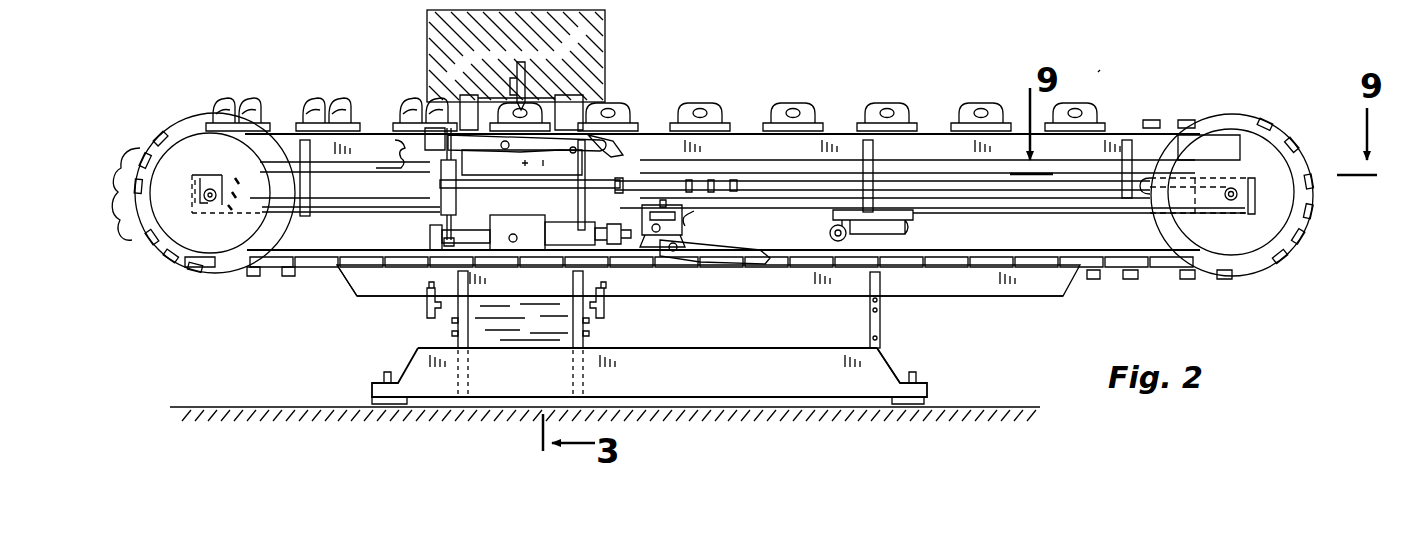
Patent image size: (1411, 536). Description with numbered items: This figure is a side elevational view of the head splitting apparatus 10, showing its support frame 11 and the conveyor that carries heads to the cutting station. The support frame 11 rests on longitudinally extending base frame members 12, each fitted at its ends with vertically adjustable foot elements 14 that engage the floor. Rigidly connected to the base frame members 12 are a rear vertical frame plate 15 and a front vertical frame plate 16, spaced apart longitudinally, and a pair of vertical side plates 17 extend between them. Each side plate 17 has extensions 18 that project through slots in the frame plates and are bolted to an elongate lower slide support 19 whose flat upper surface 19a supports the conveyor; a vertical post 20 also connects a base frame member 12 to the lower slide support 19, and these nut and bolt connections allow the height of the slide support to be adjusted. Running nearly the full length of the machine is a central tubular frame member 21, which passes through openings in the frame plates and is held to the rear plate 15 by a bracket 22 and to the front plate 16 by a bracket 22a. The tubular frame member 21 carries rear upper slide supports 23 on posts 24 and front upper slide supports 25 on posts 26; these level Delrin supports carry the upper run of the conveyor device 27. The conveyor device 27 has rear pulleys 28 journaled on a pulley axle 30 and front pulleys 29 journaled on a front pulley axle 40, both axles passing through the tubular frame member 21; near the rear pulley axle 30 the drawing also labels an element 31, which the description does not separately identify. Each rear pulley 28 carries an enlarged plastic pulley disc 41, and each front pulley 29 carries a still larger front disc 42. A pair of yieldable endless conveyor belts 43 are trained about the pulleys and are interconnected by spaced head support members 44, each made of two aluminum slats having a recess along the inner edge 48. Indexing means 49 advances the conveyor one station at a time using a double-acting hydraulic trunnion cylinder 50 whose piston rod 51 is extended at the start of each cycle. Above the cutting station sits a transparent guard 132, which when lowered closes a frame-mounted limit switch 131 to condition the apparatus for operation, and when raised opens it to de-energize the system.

The head splitting apparatus 10 is at (1101, 70).
The support frame 11 is at (892, 358).
The base frame member 12 is at (793, 363).
The foot element 14 is at (372, 399).
The rear vertical frame plate 15 is at (588, 332).
The front vertical frame plate 16 is at (460, 329).
The vertical side plate 17 is at (540, 333).
The extension 18 is at (428, 303).
The lower slide support 19 is at (982, 290).
The upper surface 19a is at (390, 266).
The vertical post 20 is at (870, 328).
The central tubular frame member 21 is at (988, 200).
The bracket 22 is at (584, 208).
The bracket 22a is at (468, 206).
The rear upper slide support 23 is at (922, 146).
The post 24 is at (873, 186).
The front upper slide support 25 is at (372, 148).
The post 26 is at (306, 187).
The conveyor device 27 is at (1173, 105).
The rear pulley 28 is at (1256, 150).
The front pulley 29 is at (190, 150).
The pulley axle 30 is at (1244, 193).
The adjuster 31 is at (1209, 212).
The front pulley axle 40 is at (211, 201).
The pulley disc 41 is at (1311, 165).
The front disc 42 is at (178, 122).
The endless conveyor belt 43 is at (1113, 130).
The head support member 44 is at (735, 122).
The inner edge 48 is at (1292, 226).
The indexing means 49 is at (729, 233).
The double-acting hydraulic trunnion cylinder 50 is at (566, 242).
The piston rod 51 is at (616, 240).
The limit switch 131 is at (433, 152).
The transparent housing or guard 132 is at (605, 60).